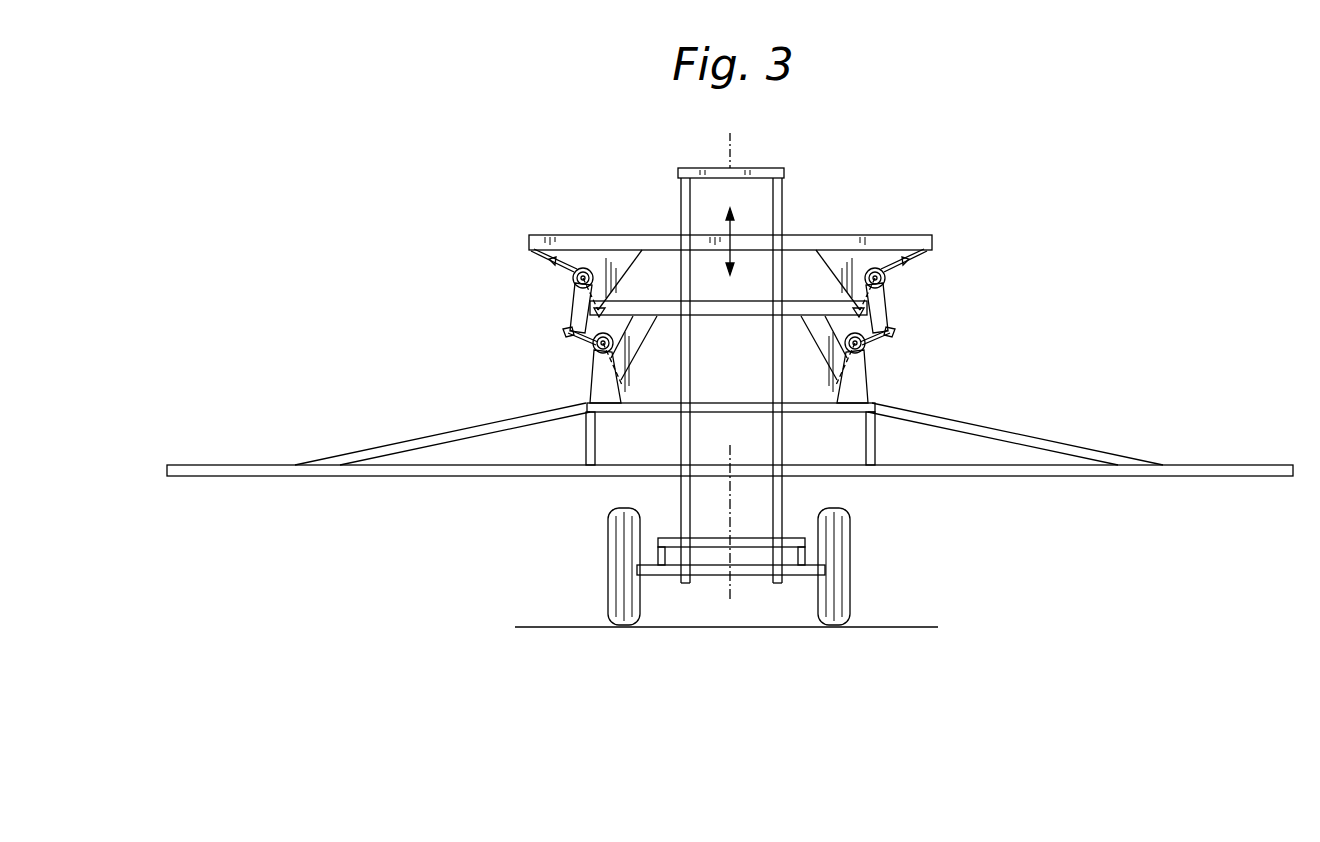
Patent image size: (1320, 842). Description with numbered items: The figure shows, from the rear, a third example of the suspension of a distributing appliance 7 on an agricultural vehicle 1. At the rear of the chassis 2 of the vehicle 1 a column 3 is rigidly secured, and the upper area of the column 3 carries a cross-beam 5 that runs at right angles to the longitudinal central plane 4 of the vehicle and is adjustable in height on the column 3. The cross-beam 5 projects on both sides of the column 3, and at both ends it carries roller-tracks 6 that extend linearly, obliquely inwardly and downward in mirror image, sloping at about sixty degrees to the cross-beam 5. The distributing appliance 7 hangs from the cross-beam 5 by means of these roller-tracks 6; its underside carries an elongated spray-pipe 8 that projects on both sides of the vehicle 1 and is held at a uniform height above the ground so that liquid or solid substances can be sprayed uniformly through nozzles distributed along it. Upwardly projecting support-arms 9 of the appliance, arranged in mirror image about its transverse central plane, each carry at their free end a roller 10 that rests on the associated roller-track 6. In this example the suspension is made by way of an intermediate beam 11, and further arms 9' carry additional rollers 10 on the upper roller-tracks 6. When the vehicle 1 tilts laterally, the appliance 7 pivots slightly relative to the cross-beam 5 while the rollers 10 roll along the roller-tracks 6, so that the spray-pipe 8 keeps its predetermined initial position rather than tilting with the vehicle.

The agricultural vehicle 1 is at (594, 566).
The chassis 2 is at (705, 572).
The column 3 is at (783, 203).
The longitudinal central plane 4 is at (735, 148).
The cross-beam 5 is at (818, 247).
The roller-tracks 6 is at (545, 262).
The distributing appliance 7 is at (407, 438).
The spray-pipe 8 is at (233, 465).
The support-arms 9 is at (731, 373).
The upper pivot arms 9' is at (726, 306).
The roller 10 is at (586, 268).
The cross bar 11 is at (745, 310).